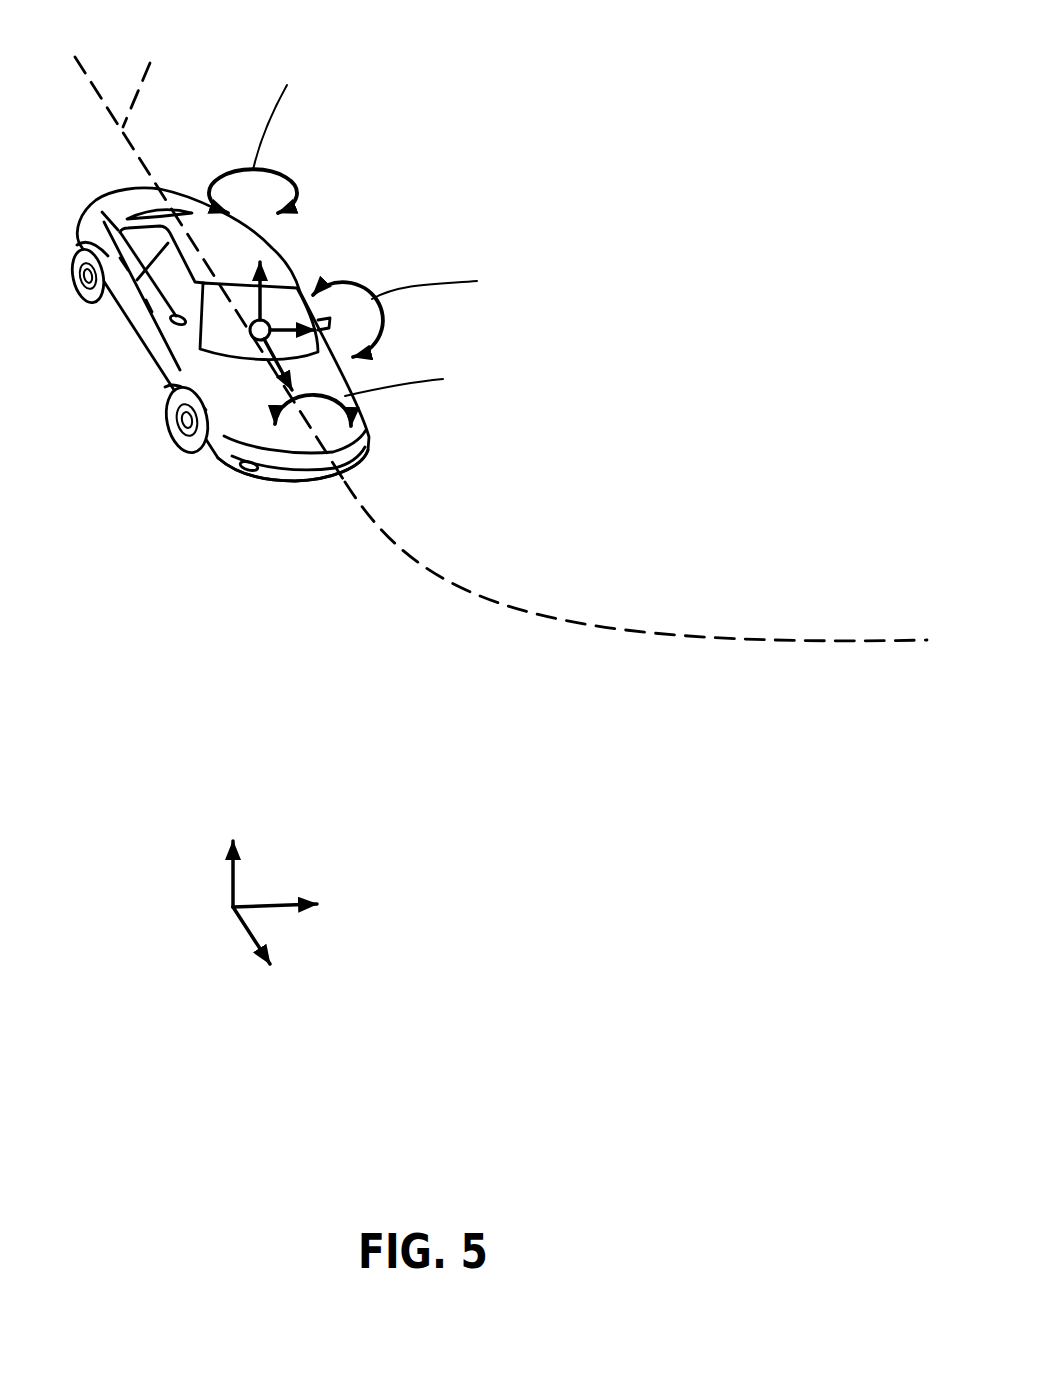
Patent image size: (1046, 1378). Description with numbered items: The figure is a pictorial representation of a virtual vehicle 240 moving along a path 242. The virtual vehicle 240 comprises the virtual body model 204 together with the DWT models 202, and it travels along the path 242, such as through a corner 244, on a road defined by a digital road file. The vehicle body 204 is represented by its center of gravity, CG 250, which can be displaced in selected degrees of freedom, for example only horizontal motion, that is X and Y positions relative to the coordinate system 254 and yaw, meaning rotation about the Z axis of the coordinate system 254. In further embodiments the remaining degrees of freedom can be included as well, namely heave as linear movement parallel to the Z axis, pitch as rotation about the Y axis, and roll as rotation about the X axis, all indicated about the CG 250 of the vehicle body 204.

The DWT models 202 is at (175, 458).
The virtual body model 204 is at (341, 447).
The virtual vehicle 240 is at (412, 143).
The path 242 is at (210, 249).
The corner 244 is at (452, 650).
The CG 250 is at (269, 321).
The coordinate system 254 is at (215, 1028).